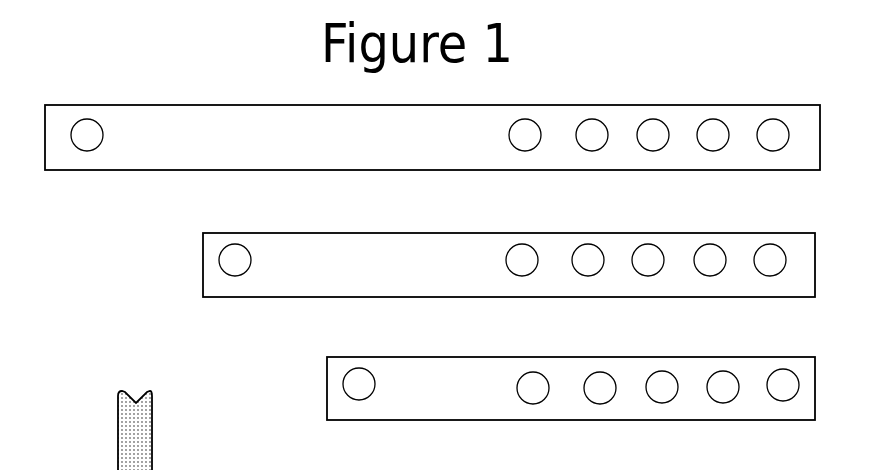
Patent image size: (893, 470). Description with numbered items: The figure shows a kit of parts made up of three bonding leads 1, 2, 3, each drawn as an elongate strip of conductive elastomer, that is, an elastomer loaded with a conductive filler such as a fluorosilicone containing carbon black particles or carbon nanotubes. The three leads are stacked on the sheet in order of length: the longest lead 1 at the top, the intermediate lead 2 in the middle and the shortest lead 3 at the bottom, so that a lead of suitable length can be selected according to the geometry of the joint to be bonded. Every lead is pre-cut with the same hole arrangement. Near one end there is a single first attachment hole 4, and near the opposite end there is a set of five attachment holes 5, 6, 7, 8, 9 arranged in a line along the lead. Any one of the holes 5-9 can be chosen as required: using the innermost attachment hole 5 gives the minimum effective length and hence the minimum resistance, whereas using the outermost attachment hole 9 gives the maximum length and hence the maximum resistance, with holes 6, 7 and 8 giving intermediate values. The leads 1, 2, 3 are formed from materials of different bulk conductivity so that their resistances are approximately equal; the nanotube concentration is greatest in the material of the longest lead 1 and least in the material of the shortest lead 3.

The bonding lead 1 is at (310, 138).
The bonding lead 2 is at (348, 270).
The bonding lead 3 is at (463, 392).
The first attachment hole 4 is at (87, 140).
The attachment hole 5 is at (523, 137).
The attachment hole 6 is at (594, 133).
The attachment hole 7 is at (653, 135).
The attachment hole 8 is at (713, 135).
The attachment hole 9 is at (773, 135).